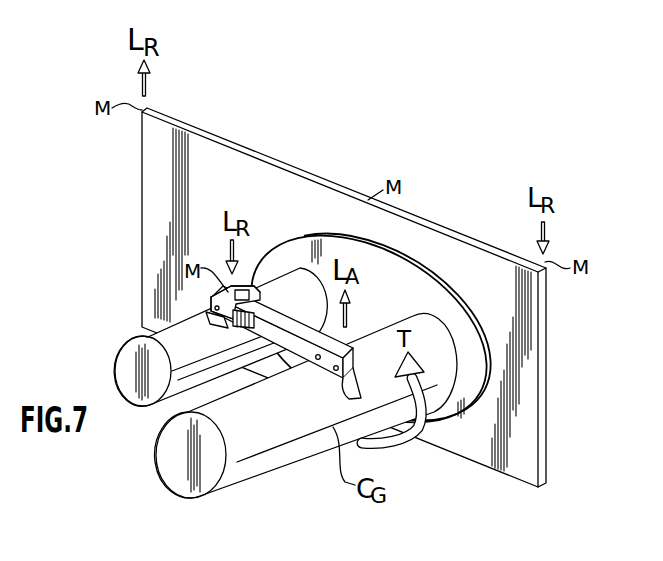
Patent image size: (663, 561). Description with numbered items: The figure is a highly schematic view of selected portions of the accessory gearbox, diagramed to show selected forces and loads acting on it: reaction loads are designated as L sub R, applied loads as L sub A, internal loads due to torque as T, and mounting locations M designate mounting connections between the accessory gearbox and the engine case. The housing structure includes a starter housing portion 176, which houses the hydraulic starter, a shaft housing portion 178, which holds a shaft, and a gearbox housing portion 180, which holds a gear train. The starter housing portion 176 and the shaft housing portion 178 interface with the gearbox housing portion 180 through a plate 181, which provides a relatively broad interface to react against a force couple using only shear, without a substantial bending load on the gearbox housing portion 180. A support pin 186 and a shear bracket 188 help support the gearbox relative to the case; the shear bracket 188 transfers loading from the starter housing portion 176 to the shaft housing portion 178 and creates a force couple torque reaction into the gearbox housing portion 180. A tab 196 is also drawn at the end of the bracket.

The starter housing portion 176 is at (257, 462).
The shaft housing portion 178 is at (172, 333).
The gearbox housing portion 180 is at (520, 388).
The plate 181 is at (373, 277).
The support pin 186 is at (218, 323).
The shear bracket 188 is at (328, 367).
The tab 196 is at (356, 373).